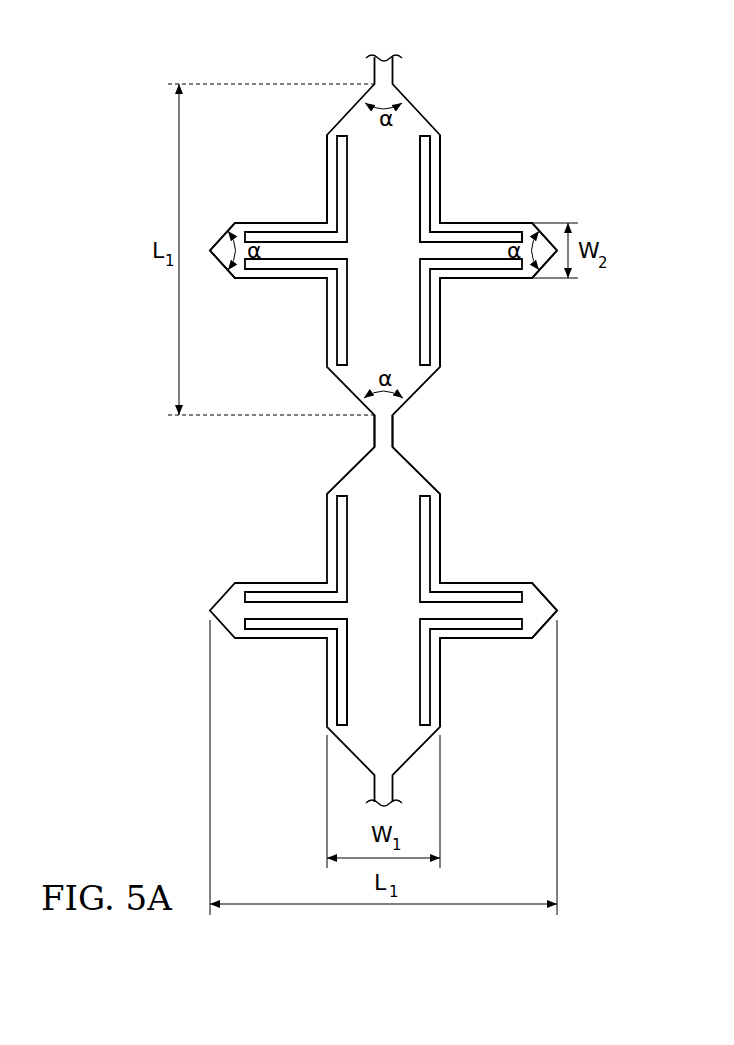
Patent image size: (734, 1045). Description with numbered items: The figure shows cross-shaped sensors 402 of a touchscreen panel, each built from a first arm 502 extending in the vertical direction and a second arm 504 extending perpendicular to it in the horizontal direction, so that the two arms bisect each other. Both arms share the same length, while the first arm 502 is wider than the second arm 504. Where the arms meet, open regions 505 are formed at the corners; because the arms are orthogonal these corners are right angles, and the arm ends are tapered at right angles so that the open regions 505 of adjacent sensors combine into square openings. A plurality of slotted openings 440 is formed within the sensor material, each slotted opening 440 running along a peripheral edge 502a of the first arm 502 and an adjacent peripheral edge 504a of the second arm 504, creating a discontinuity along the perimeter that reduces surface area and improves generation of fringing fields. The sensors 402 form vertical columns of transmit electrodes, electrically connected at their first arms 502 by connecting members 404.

The cross-shaped sensor 402 is at (597, 210).
The connecting member 404 is at (383, 432).
The slotted opening 440 is at (427, 148).
The first arm 502 is at (443, 350).
The edge 502a is at (327, 158).
The second arm 504 is at (505, 222).
The edge 504a is at (282, 223).
The open region 505 is at (278, 160).